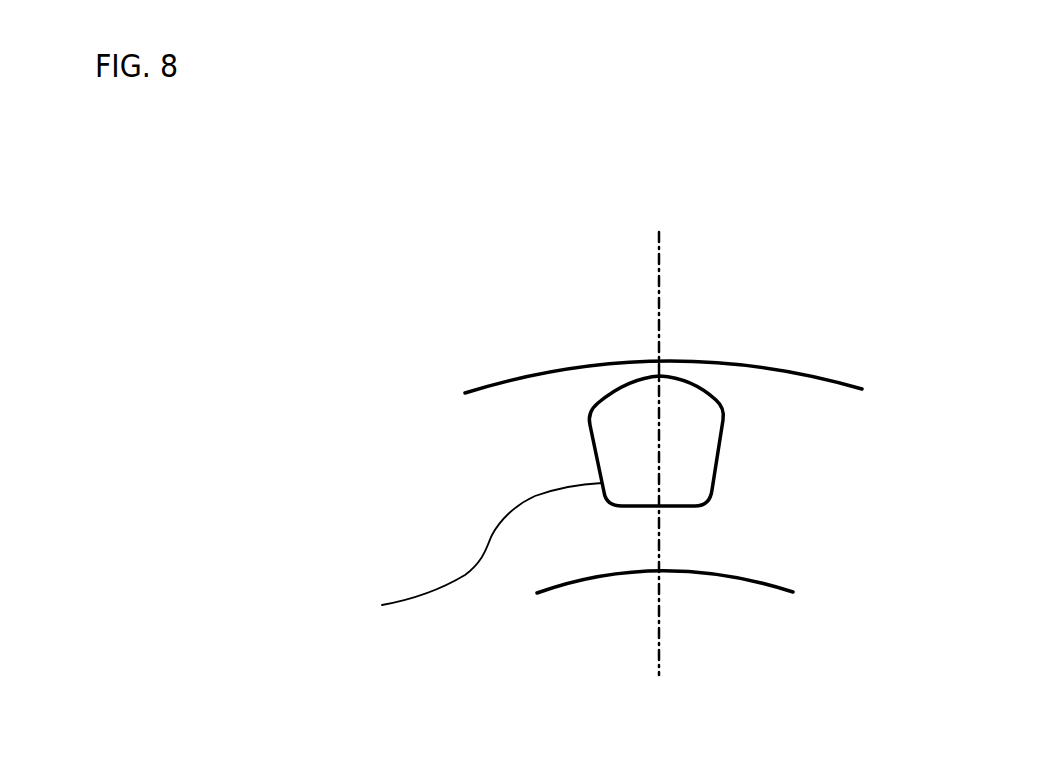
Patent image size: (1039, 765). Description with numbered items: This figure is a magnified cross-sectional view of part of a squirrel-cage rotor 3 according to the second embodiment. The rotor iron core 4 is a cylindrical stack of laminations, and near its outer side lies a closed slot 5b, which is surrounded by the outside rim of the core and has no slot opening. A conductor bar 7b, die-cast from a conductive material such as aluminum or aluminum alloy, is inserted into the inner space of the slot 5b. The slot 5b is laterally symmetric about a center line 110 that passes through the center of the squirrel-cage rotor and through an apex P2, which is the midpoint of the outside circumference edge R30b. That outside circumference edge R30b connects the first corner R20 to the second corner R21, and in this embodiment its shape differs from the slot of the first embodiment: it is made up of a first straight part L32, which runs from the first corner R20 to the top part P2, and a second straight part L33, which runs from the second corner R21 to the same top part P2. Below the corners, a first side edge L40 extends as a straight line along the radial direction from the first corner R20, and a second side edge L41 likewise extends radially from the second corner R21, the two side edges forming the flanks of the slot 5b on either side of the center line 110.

The squirrel-cage rotor 3 is at (866, 302).
The rotor iron core 4 is at (487, 392).
The slot 5b is at (444, 562).
The conductor bar 7b is at (705, 468).
The center line 110 is at (658, 613).
The apex P2 is at (661, 356).
The first corner R20 is at (585, 405).
The second corner R21 is at (729, 404).
The outside circumference edge R30b is at (685, 388).
The first straight part L32 is at (622, 386).
The second straight part L33 is at (702, 387).
The first side edge L40 is at (596, 455).
The second side edge L41 is at (682, 462).